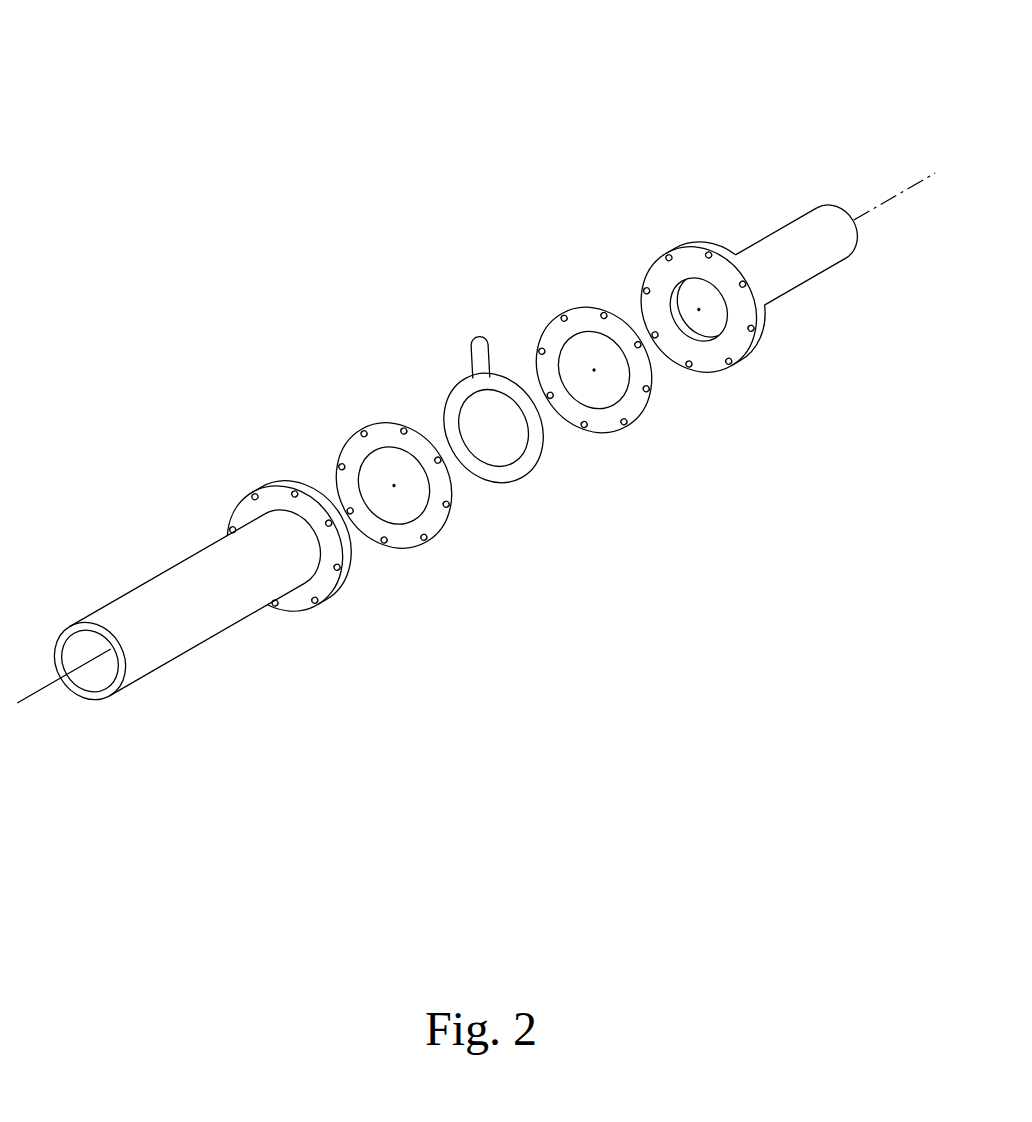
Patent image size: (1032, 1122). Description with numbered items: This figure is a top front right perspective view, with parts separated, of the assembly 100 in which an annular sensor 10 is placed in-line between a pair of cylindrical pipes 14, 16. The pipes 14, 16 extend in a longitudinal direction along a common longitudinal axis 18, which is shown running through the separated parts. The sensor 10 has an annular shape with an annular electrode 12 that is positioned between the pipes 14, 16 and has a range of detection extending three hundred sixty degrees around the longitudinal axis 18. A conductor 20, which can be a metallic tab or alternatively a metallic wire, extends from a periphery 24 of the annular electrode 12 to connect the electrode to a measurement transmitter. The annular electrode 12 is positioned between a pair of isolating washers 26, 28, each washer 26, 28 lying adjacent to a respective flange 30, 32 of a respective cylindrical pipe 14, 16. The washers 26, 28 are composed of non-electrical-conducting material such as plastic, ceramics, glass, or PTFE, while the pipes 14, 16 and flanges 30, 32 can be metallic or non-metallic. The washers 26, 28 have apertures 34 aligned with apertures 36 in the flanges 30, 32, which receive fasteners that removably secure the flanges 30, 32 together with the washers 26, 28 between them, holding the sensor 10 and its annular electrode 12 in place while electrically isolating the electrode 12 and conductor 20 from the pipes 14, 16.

The assembly 100 is at (190, 75).
The sensor 10 is at (420, 357).
The annular electrode 12 is at (522, 407).
The cylindrical pipe 14 is at (165, 592).
The cylindrical pipe 16 is at (773, 230).
The longitudinal axis 18 is at (862, 215).
The conductor 20 is at (479, 338).
The periphery 24 is at (540, 460).
The isolating washer 26 is at (403, 547).
The isolating washer 28 is at (632, 408).
The flange 30 is at (287, 603).
The flange 32 is at (703, 365).
The apertures 34 is at (364, 432).
The apertures 36 is at (247, 498).